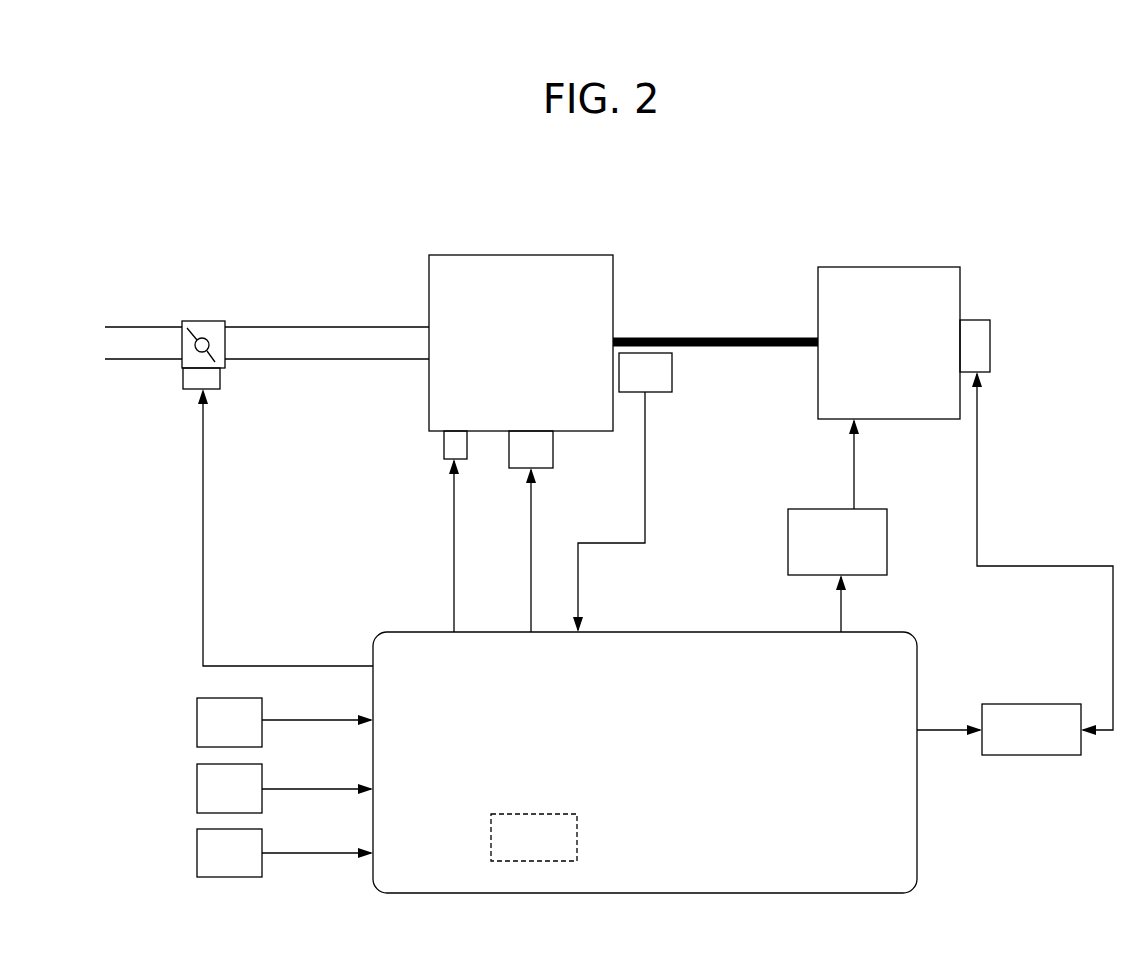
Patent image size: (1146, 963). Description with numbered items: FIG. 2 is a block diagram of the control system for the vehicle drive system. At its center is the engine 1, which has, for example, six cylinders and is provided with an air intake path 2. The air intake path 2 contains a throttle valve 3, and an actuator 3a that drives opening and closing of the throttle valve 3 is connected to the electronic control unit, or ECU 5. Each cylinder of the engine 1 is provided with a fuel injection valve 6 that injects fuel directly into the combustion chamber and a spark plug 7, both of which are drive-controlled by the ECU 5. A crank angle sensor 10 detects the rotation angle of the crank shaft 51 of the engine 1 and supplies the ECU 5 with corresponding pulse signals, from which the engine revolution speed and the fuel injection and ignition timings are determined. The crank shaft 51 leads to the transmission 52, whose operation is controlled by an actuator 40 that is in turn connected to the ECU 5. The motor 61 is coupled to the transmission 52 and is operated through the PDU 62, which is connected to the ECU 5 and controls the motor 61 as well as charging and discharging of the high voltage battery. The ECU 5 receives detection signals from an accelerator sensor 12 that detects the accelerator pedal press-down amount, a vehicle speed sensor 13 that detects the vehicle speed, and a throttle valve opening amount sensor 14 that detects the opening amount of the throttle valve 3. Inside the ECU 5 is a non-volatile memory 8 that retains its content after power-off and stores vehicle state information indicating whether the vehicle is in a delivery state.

The engine 1 is at (528, 255).
The air intake path 2 is at (355, 327).
The throttle valve 3 is at (190, 328).
The actuator 3a is at (183, 377).
The electronic control unit (ECU) 5 is at (680, 632).
The fuel injection valve 6 is at (444, 440).
The spark plug 7 is at (540, 470).
The non-volatile memory 8 is at (577, 835).
The crank angle sensor 10 is at (660, 392).
The accelerator sensor 12 is at (197, 720).
The vehicle speed sensor 13 is at (197, 786).
The throttle valve opening amount sensor 14 is at (197, 850).
The actuator 40 is at (788, 540).
The crank shaft 51 is at (648, 338).
The transmission 52 is at (890, 267).
The motor 61 is at (980, 320).
The PDU (power drive unit) 62 is at (1027, 704).